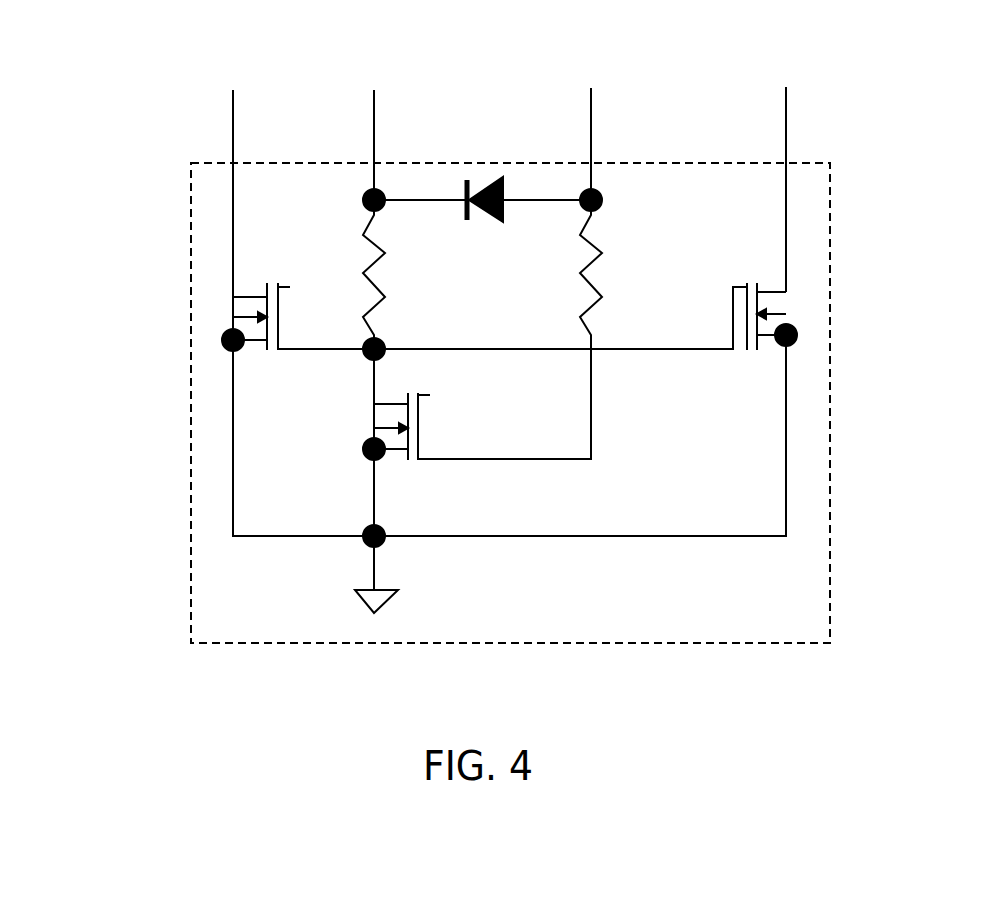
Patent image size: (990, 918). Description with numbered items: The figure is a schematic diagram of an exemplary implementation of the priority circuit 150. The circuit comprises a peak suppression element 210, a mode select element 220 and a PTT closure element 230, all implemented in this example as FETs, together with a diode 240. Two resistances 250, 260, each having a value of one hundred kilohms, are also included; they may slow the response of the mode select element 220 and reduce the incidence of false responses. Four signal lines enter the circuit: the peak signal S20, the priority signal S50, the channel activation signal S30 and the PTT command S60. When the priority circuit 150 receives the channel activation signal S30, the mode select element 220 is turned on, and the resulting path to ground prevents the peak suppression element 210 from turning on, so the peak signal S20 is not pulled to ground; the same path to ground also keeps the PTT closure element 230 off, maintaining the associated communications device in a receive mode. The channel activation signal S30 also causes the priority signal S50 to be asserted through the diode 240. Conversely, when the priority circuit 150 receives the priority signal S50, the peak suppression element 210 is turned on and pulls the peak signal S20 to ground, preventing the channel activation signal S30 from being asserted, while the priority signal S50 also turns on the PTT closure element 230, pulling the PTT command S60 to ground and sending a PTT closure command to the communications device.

The priority circuit 150 is at (760, 597).
The peak suppression element 210 is at (222, 375).
The mode select element 220 is at (432, 470).
The PTT closure element 230 is at (810, 317).
The diode 240 is at (506, 229).
The resistance 250 is at (353, 263).
The resistance 260 is at (612, 272).
The peak signal S20 is at (222, 135).
The priority signal S50 is at (362, 135).
The channel activation signal S30 is at (582, 130).
The PTT command S60 is at (775, 130).